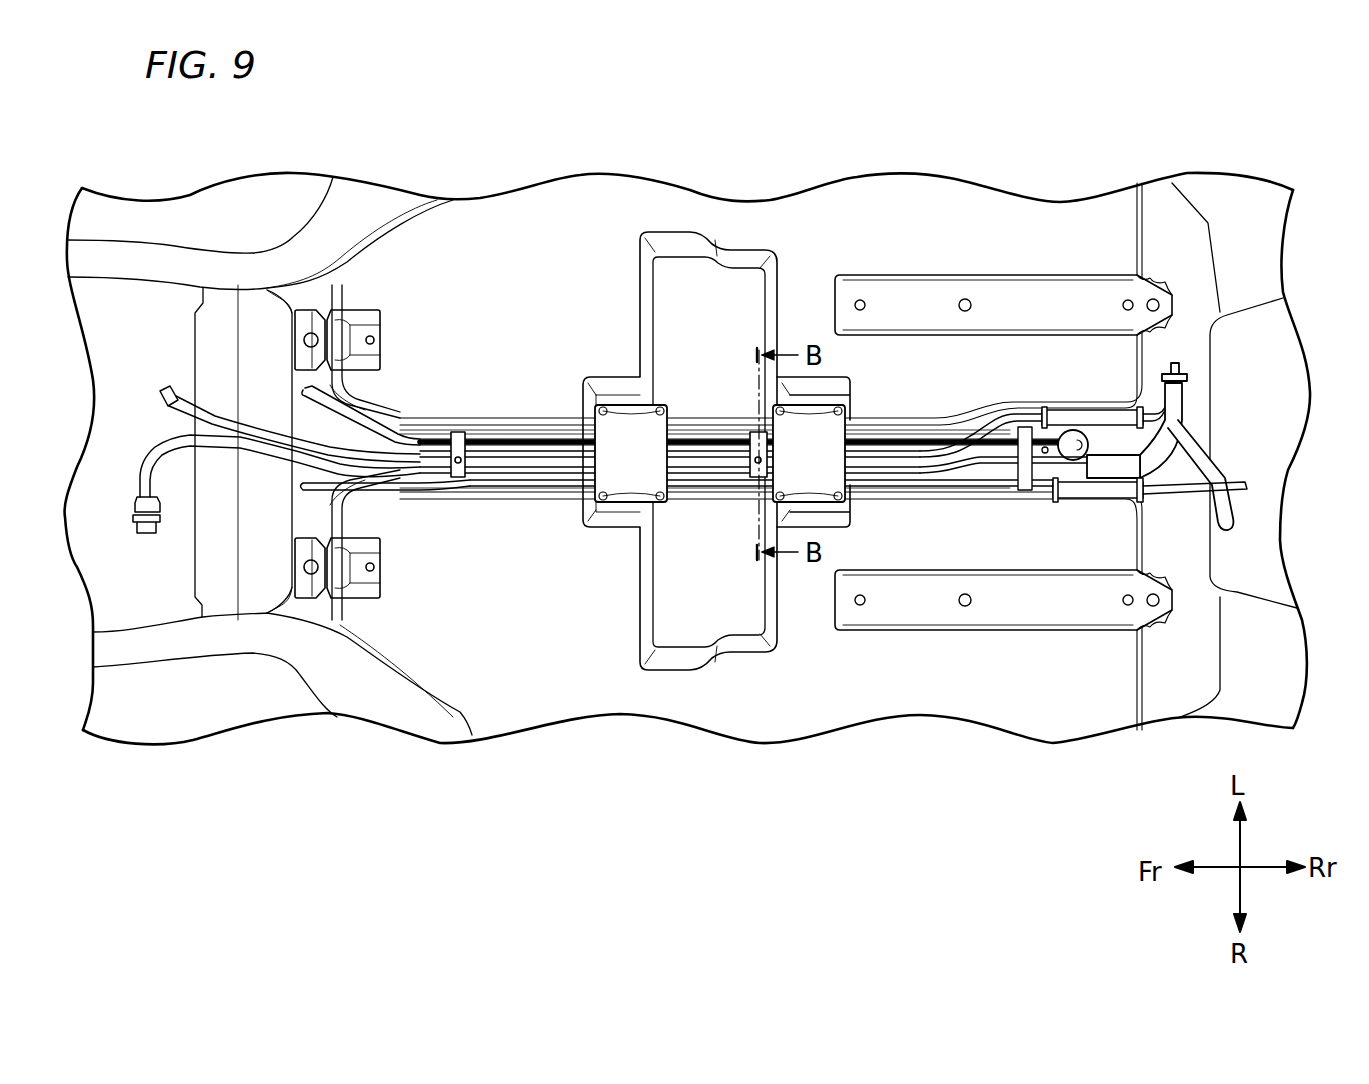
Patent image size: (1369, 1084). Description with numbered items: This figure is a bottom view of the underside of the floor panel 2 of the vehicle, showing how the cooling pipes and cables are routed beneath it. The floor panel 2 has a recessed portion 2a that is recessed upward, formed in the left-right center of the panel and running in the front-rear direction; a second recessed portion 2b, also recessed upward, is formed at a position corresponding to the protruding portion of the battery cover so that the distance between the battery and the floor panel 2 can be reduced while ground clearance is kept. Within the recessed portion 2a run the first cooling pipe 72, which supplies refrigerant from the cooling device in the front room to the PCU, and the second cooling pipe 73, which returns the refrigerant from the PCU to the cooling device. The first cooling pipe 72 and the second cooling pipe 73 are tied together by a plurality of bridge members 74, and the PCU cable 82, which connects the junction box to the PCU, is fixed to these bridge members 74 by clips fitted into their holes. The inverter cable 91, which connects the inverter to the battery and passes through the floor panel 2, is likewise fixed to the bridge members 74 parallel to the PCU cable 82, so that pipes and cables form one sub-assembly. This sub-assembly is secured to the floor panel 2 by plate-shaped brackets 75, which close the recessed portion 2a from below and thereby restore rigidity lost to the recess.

The floor panel 2 is at (825, 232).
The recessed portion 2a is at (1120, 447).
The second recessed portion 2b is at (660, 282).
The first cooling pipe 72 is at (495, 425).
The second cooling pipe 73 is at (496, 487).
The bridge member 74 is at (450, 478).
The bracket 75 is at (628, 450).
The PCU cable 82 is at (533, 453).
The inverter cable 91 is at (1005, 455).